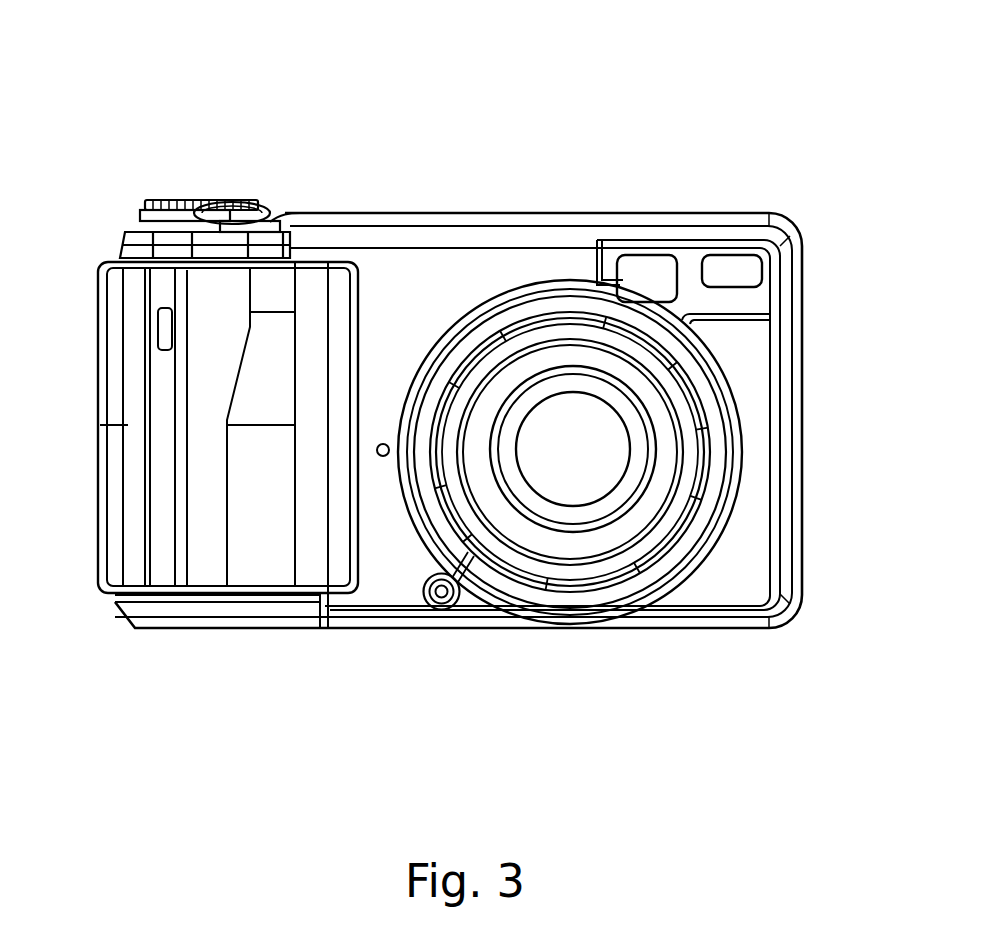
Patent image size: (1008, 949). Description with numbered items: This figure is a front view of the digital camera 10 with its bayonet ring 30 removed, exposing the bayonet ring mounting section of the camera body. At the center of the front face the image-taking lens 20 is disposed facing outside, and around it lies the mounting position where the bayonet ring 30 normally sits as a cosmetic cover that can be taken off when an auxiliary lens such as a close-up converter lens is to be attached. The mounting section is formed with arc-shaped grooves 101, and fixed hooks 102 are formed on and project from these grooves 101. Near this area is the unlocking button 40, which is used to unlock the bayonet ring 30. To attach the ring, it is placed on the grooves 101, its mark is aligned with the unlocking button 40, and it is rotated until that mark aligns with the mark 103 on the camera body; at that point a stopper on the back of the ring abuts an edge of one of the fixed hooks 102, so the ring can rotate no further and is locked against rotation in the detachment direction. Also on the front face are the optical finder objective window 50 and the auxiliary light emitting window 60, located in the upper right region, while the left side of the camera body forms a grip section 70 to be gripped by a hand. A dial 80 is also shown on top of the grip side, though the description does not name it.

The digital camera 10 is at (710, 103).
The image-taking lens 20 is at (595, 470).
The bayonet ring 30 is at (640, 390).
The unlocking button 40 is at (441, 598).
The optical finder objective window 50 is at (647, 272).
The auxiliary light emitting window 60 is at (730, 268).
The grip section 70 is at (205, 408).
The mode dial 80 is at (156, 198).
The arc-shaped grooves 101 is at (448, 368).
The fixed hooks 102 is at (517, 320).
The mark 103 is at (383, 442).